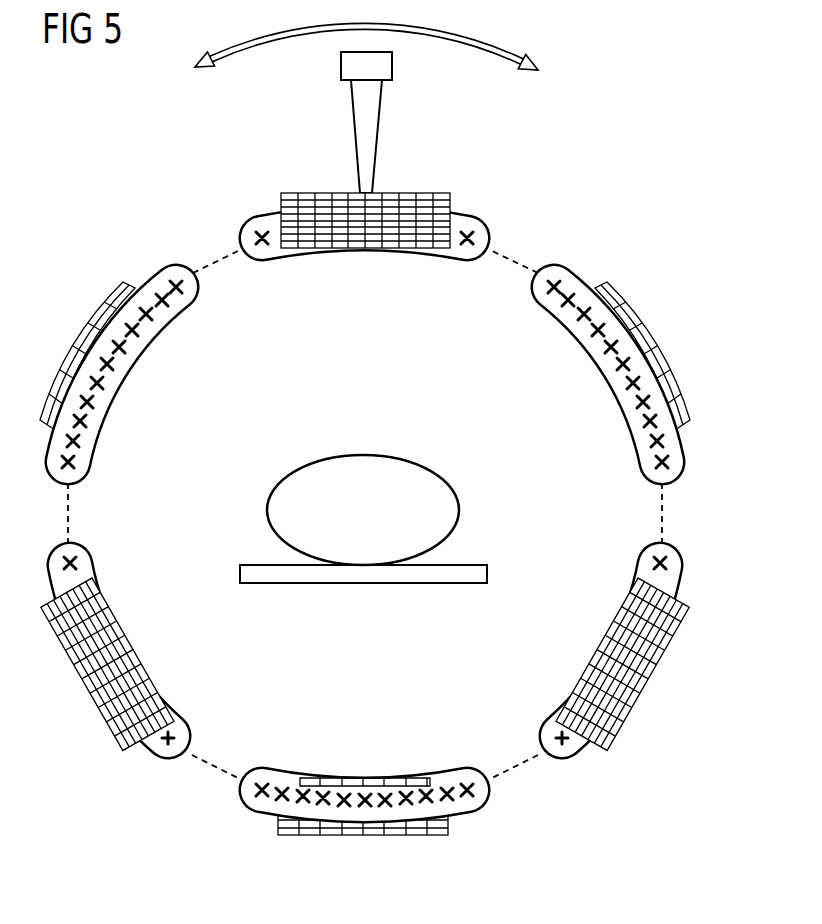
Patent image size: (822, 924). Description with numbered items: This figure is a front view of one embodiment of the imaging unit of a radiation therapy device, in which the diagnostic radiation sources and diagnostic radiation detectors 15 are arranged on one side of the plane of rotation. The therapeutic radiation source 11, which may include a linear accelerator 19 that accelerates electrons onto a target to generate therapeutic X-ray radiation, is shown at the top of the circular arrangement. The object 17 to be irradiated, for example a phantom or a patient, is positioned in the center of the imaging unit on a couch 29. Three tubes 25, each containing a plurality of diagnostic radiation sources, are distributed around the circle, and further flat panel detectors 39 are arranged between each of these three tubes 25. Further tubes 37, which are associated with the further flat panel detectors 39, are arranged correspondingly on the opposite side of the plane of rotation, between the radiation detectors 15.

The therapeutic radiation source 11 is at (340, 122).
The linear accelerator 19 is at (380, 113).
The diagnostic radiation detector 15 is at (117, 303).
The object 17 is at (395, 455).
The tube 25 is at (262, 216).
The couch 29 is at (468, 563).
The further tube 37 is at (157, 273).
The further flat panel detector 39 is at (323, 192).